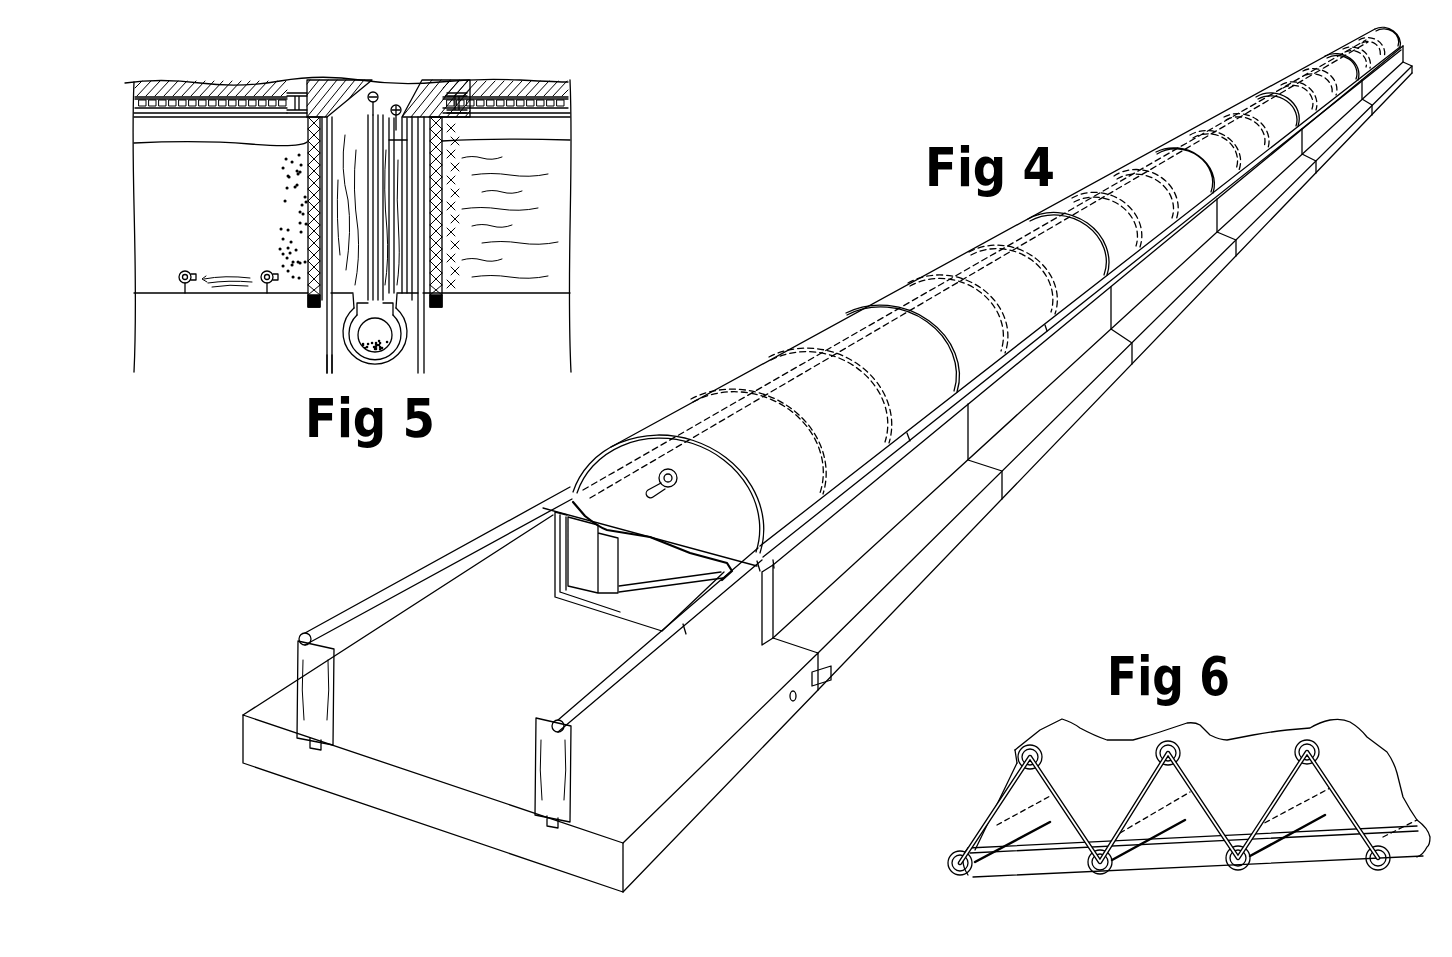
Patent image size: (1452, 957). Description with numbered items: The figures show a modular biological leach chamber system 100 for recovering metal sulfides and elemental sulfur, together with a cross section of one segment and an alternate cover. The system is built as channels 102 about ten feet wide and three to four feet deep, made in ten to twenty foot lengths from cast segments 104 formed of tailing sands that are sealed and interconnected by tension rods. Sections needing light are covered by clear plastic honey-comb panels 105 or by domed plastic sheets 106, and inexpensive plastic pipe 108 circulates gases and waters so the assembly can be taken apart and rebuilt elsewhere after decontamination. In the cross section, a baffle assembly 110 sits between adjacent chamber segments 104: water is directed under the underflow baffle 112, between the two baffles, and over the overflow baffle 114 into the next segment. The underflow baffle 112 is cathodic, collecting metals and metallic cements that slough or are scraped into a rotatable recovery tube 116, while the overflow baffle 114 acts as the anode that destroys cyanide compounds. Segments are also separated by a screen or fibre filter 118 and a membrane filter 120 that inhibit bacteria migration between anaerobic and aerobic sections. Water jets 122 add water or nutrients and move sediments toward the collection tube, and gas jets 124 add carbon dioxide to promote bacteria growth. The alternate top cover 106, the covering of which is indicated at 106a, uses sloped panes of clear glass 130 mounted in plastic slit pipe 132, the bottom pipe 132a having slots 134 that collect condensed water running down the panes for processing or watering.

In FIG. 4, the chamber system 100 is at (957, 533).
In FIG. 4, the channels 102 is at (616, 756).
In FIG. 4, the cast segments 104 is at (875, 621).
In FIG. 5, the cast segments 104 is at (352, 242).
In FIG. 4, the clear plastic honey-comb panels 105 is at (769, 571).
In FIG. 5, the clear plastic honey-comb panels 105 is at (231, 80).
In FIG. 4, the domed plastic sheets 106 is at (735, 380).
In FIG. 6, the canopy fabric 106a is at (983, 820).
In FIG. 4, the plastic pipe 108 is at (627, 672).
In FIG. 5, the baffle assembly 110 is at (344, 364).
In FIG. 5, the underflow baffle 112 is at (408, 97).
In FIG. 5, the overflow baffle 114 is at (437, 84).
In FIG. 5, the rotatable recovery tube 116 is at (356, 339).
In FIG. 5, the screen or fibre filter 118 is at (441, 134).
In FIG. 5, the membrane filter 120 is at (349, 113).
In FIG. 5, the water jets 122 is at (177, 272).
In FIG. 5, the gas jets 124 is at (257, 272).
In FIG. 6, the sloped panes of clear glass 130 is at (1240, 757).
In FIG. 6, the plastic slit pipe 132 is at (1333, 737).
In FIG. 6, the bottom pipe 132a is at (995, 855).
In FIG. 6, the slots 134 is at (1270, 857).